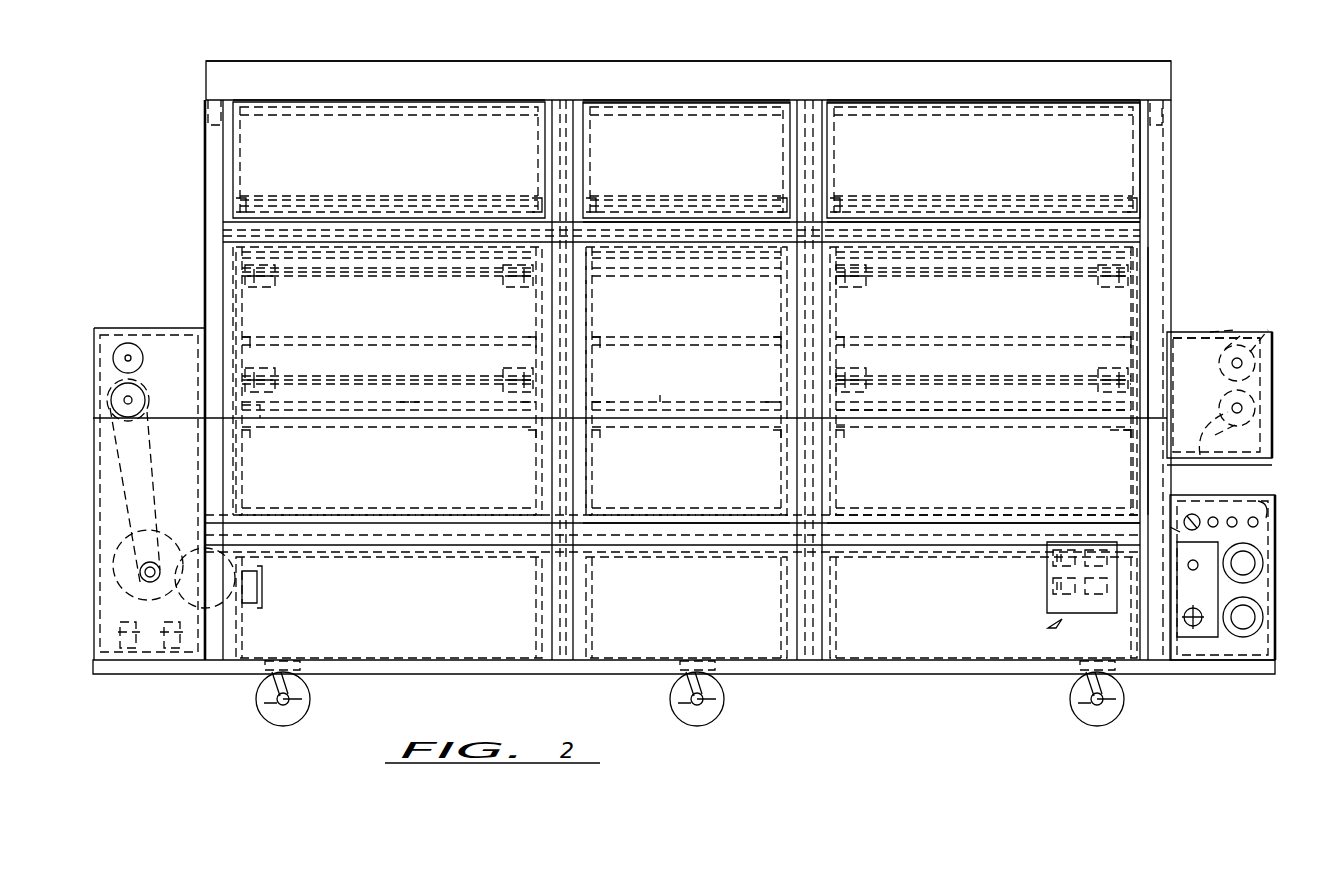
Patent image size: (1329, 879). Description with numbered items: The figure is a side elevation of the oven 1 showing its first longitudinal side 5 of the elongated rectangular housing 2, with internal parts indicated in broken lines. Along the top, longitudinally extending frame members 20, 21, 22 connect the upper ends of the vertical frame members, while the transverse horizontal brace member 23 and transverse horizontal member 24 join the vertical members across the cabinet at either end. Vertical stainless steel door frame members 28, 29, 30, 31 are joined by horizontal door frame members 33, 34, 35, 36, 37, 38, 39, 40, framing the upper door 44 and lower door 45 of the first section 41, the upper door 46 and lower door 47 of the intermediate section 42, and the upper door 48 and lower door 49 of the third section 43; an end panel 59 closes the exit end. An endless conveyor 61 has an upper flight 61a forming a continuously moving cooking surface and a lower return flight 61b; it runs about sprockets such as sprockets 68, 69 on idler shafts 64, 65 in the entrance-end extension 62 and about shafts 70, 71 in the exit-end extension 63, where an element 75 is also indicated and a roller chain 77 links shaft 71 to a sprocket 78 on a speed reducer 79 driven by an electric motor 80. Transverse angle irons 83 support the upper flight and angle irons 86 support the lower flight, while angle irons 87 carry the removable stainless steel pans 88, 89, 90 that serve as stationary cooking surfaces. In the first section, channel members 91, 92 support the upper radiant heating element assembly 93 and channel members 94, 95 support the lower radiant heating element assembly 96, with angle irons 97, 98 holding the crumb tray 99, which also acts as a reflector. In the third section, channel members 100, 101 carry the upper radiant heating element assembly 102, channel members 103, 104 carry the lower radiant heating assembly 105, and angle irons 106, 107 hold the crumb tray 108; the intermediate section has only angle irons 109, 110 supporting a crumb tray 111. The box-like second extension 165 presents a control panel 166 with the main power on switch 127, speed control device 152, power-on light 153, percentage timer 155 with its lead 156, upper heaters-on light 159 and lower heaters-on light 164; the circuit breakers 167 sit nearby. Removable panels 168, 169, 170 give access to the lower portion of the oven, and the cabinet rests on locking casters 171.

The oven 1 is at (600, 67).
The housing 2 is at (840, 67).
The first longitudinal side 5 is at (420, 655).
The longitudinally extending frame member 20 is at (336, 100).
The longitudinally extending frame member 21 is at (700, 100).
The longitudinally extending frame member 22 is at (960, 100).
The horizontal brace member 23 is at (210, 120).
The transverse horizontal member 24 is at (1160, 124).
The vertical door frame member 28 is at (205, 212).
The vertical door frame member 29 is at (565, 293).
The vertical door frame member 30 is at (815, 296).
The vertical door frame member 31 is at (1152, 318).
The horizontal door frame member 33 is at (740, 103).
The horizontal door frame member 34 is at (1070, 103).
The horizontal door frame member 35 is at (400, 240).
The horizontal door frame member 36 is at (716, 236).
The horizontal door frame member 37 is at (1040, 236).
The horizontal door frame member 38 is at (405, 526).
The horizontal door frame member 39 is at (690, 526).
The horizontal door frame member 40 is at (955, 528).
The first section 41 is at (1150, 300).
The intermediate section 42 is at (665, 365).
The third section 43 is at (275, 308).
The upper door 44 is at (991, 155).
The lower door 45 is at (977, 479).
The upper door 46 is at (709, 152).
The lower door 47 is at (688, 471).
The upper door 48 is at (352, 156).
The lower door 49 is at (388, 476).
The end panel 59 is at (205, 152).
The endless conveyor 61 is at (1258, 322).
The upper flight 61a is at (1242, 314).
The lower return flight 61b is at (1237, 444).
The extension 62 is at (1270, 412).
The extension 63 is at (88, 378).
The idler shaft 64 is at (1252, 360).
The idler shaft 65 is at (1203, 436).
The sprocket 68 is at (1232, 363).
The sprocket 69 is at (1232, 408).
The shaft 70 is at (144, 357).
The shaft 71 is at (148, 396).
The drive shaft 75 is at (148, 406).
The roller chain 77 is at (150, 480).
The sprocket 78 is at (130, 615).
The speed reducer 79 is at (152, 650).
The electric motor 80 is at (263, 584).
The angle iron 83 is at (246, 346).
The angle iron 86 is at (246, 438).
The angle iron 87 is at (240, 208).
The stainless steel pan 88 is at (1000, 205).
The stainless steel pan 89 is at (655, 205).
The stainless steel pan 90 is at (340, 205).
The channel member 91 is at (848, 285).
The channel member 92 is at (1122, 287).
The upper radiant heating element assembly 93 is at (945, 276).
The channel member 94 is at (852, 384).
The channel member 95 is at (1100, 382).
The lower radiant heating element assembly 96 is at (960, 377).
The angle iron 97 is at (842, 430).
The angle iron 98 is at (1120, 430).
The crumb tray 99 is at (960, 430).
The channel member 100 is at (252, 283).
The channel member 101 is at (526, 283).
The upper radiant heating element assembly 102 is at (368, 276).
The channel member 103 is at (272, 388).
The channel member 104 is at (506, 380).
The lower radiant heating assembly 105 is at (354, 378).
The angle iron 106 is at (258, 412).
The angle iron 107 is at (540, 400).
The crumb tray 108 is at (410, 402).
The angle iron 109 is at (596, 402).
The angle iron 110 is at (778, 402).
The crumb tray 111 is at (680, 398).
The main power on switch 127 is at (1188, 514).
The speed control device 152 is at (1208, 640).
The power-on light 153 is at (1214, 517).
The percentage timer 155 is at (1188, 565).
The lead 156 is at (1184, 617).
The upper heaters-on light 159 is at (1170, 530).
The lower heaters-on light 164 is at (1272, 484).
The second extension 165 is at (1280, 560).
The control panel 166 is at (1222, 588).
The circuit breakers 167 is at (1048, 628).
The removable panel 168 is at (919, 614).
The removable panel 169 is at (679, 609).
The removable panel 170 is at (404, 611).
The locking caster 171 is at (311, 702).